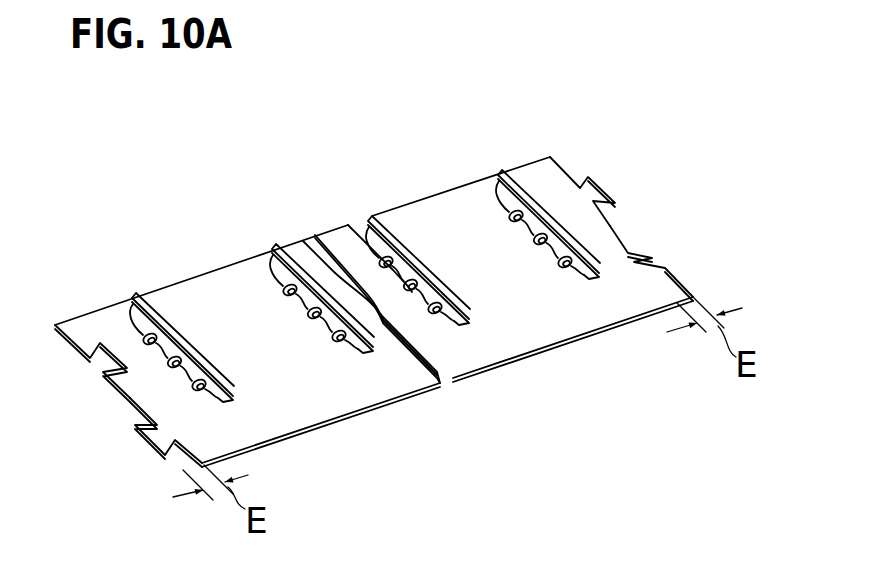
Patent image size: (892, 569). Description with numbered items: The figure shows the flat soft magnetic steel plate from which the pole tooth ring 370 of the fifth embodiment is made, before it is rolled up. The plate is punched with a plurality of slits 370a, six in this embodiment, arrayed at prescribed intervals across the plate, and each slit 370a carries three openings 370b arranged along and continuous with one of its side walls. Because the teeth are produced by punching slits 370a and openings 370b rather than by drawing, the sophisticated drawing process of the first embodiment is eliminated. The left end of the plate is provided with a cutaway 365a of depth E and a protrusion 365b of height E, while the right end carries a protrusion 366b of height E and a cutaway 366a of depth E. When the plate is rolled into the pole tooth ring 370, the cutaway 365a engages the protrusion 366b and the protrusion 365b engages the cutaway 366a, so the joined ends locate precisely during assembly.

The pole tooth ring 370 is at (311, 150).
The slit 370a is at (369, 234).
The opening 370b is at (414, 274).
The cutaway 365a is at (100, 364).
The protrusion 365b is at (158, 437).
The cutaway 366a is at (656, 267).
The protrusion 366b is at (600, 196).